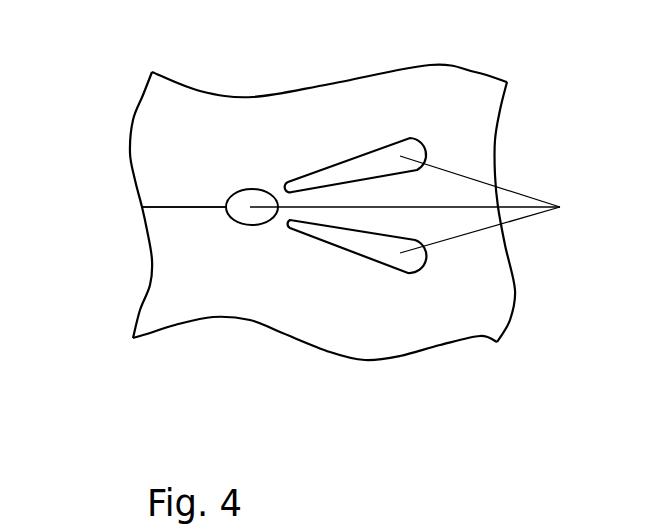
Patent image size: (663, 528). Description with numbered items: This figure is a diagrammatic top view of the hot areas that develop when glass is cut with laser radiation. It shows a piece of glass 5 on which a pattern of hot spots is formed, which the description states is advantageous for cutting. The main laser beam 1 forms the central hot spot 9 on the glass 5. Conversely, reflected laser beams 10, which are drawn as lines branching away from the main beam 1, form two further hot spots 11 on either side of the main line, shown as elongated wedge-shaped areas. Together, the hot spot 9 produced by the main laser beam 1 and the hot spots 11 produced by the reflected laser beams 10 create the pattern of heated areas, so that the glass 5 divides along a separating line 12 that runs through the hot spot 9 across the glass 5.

The main laser beam 1 is at (460, 207).
The glass 5 is at (470, 93).
The hot spot 9 is at (245, 210).
The reflected laser beams 10 is at (472, 178).
The hot spots 11 is at (363, 173).
The separating line 12 is at (182, 207).